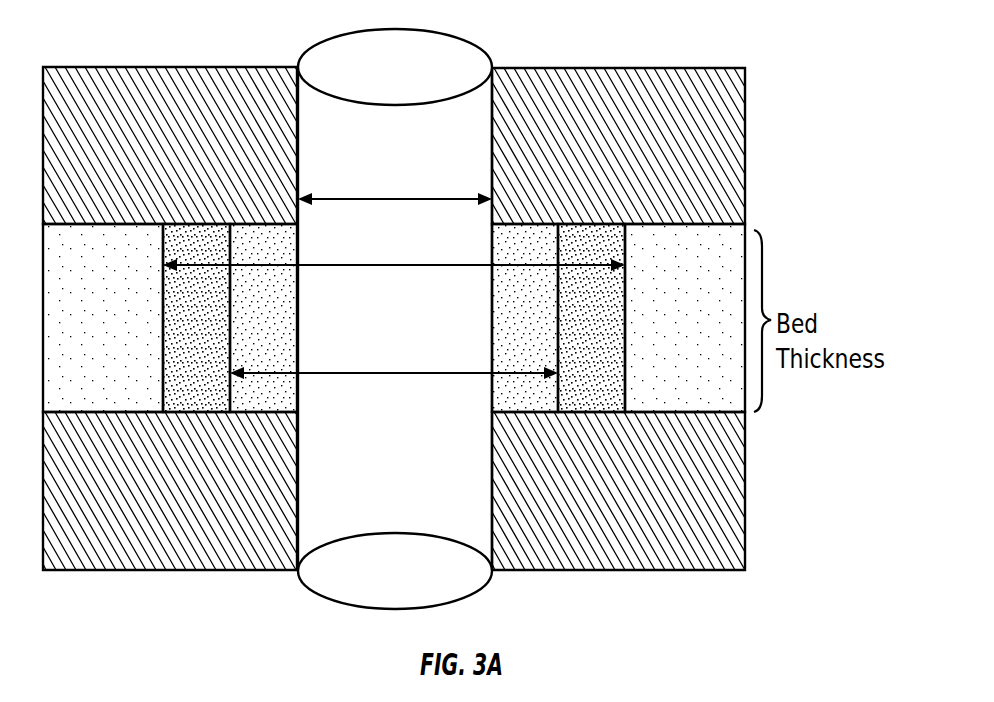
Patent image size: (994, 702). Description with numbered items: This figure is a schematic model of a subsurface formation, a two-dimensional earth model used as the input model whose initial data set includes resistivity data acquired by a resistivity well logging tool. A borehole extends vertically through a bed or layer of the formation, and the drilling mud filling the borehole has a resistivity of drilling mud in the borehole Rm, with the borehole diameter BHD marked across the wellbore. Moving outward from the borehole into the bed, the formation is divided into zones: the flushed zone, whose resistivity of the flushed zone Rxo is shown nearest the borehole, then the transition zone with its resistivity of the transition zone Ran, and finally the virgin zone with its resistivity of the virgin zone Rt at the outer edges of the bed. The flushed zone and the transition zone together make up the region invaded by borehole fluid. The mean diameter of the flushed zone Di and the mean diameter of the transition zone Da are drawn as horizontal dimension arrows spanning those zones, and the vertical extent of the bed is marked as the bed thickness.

The resistivity of the virgin zone Rt is at (394, 318).
The resistivity of the transition zone Ran is at (394, 318).
The resistivity of the flushed zone Rxo is at (394, 318).
The resistivity of drilling mud in the borehole Rm is at (395, 319).
The borehole diameter BHD is at (395, 186).
The mean diameter of the transition zone Da is at (394, 254).
The mean diameter of the flushed zone Di is at (394, 361).